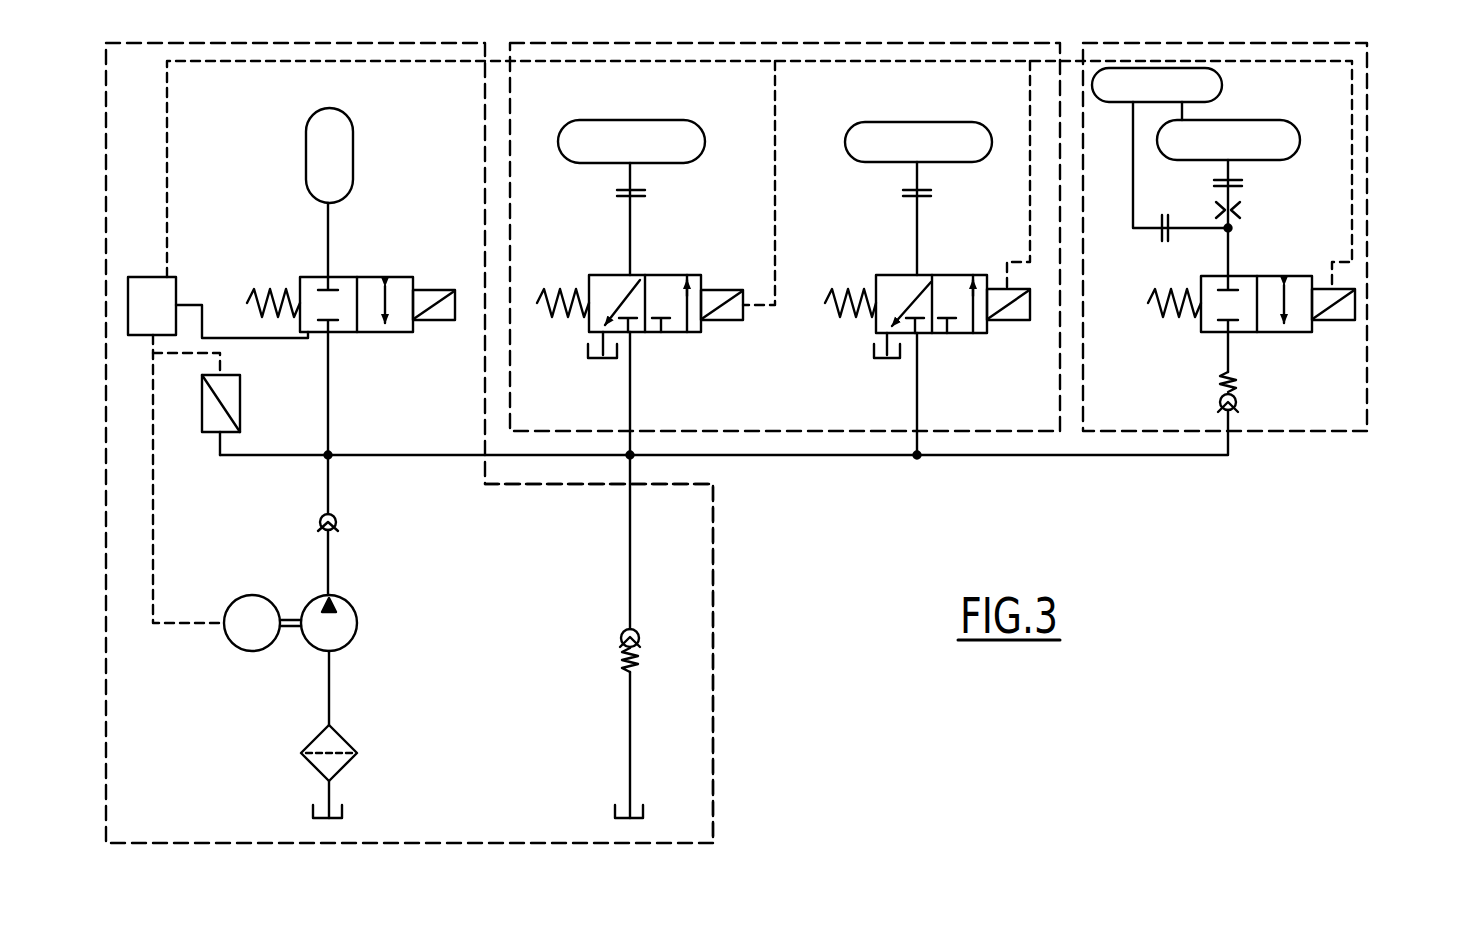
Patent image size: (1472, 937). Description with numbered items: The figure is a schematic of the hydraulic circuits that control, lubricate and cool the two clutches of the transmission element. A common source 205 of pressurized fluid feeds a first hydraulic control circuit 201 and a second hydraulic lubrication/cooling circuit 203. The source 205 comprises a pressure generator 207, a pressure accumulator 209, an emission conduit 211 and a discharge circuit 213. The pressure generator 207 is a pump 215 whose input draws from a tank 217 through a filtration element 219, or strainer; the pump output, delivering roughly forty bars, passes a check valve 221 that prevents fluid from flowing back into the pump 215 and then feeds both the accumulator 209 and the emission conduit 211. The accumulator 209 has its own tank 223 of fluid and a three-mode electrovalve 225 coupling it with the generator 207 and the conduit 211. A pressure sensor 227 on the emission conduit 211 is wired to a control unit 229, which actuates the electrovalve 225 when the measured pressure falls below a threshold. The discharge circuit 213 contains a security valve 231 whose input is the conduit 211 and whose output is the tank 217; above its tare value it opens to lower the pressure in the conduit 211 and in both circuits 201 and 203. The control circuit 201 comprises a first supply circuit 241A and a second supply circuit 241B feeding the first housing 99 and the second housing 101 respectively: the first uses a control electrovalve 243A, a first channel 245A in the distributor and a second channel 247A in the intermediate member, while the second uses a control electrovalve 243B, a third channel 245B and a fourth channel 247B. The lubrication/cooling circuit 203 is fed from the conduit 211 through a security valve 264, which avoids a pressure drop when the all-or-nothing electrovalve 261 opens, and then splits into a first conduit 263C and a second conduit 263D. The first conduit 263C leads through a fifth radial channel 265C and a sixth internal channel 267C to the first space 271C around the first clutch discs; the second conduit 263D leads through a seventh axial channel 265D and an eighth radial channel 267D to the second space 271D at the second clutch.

The first housing 99 is at (628, 128).
The second housing 101 is at (926, 130).
The first hydraulic control circuit 201 is at (985, 433).
The second hydraulic lubrication/cooling circuit 203 is at (1272, 433).
The source of pressurized fluid 205 is at (714, 745).
The pressure generator 207 is at (402, 688).
The pressure accumulator 209 is at (227, 253).
The emission conduit 211 is at (405, 455).
The discharge circuit 213 is at (631, 562).
The pump 215 is at (357, 623).
The tank 217 is at (344, 808).
The filtration element 219 is at (318, 745).
The check valve 221 is at (336, 520).
The tank of fluid 223 is at (332, 158).
The electrovalve 225 is at (315, 285).
The pressure sensor 227 is at (241, 407).
The control unit 229 is at (151, 287).
The security valve 231 is at (620, 640).
The first supply circuit 241A is at (637, 343).
The second supply circuit 241B is at (892, 372).
The control electrovalve 243A is at (641, 279).
The control electrovalve 243B is at (933, 281).
The first channel 245A is at (629, 232).
The third channel 245B is at (915, 232).
The second channel 247A is at (634, 185).
The fourth channel 247B is at (920, 185).
The control electrovalve 261 is at (1272, 335).
The first conduit 263C is at (1160, 246).
The second conduit 263D is at (1334, 203).
The security valve 264 is at (1218, 400).
The fifth radial channel 265C is at (1192, 226).
The seventh axial channel 265D is at (1238, 211).
The sixth internal channel 267C is at (1132, 139).
The eighth internal radial channel 267D is at (1234, 172).
The first space 271C is at (1205, 83).
The second space 271D is at (1283, 141).